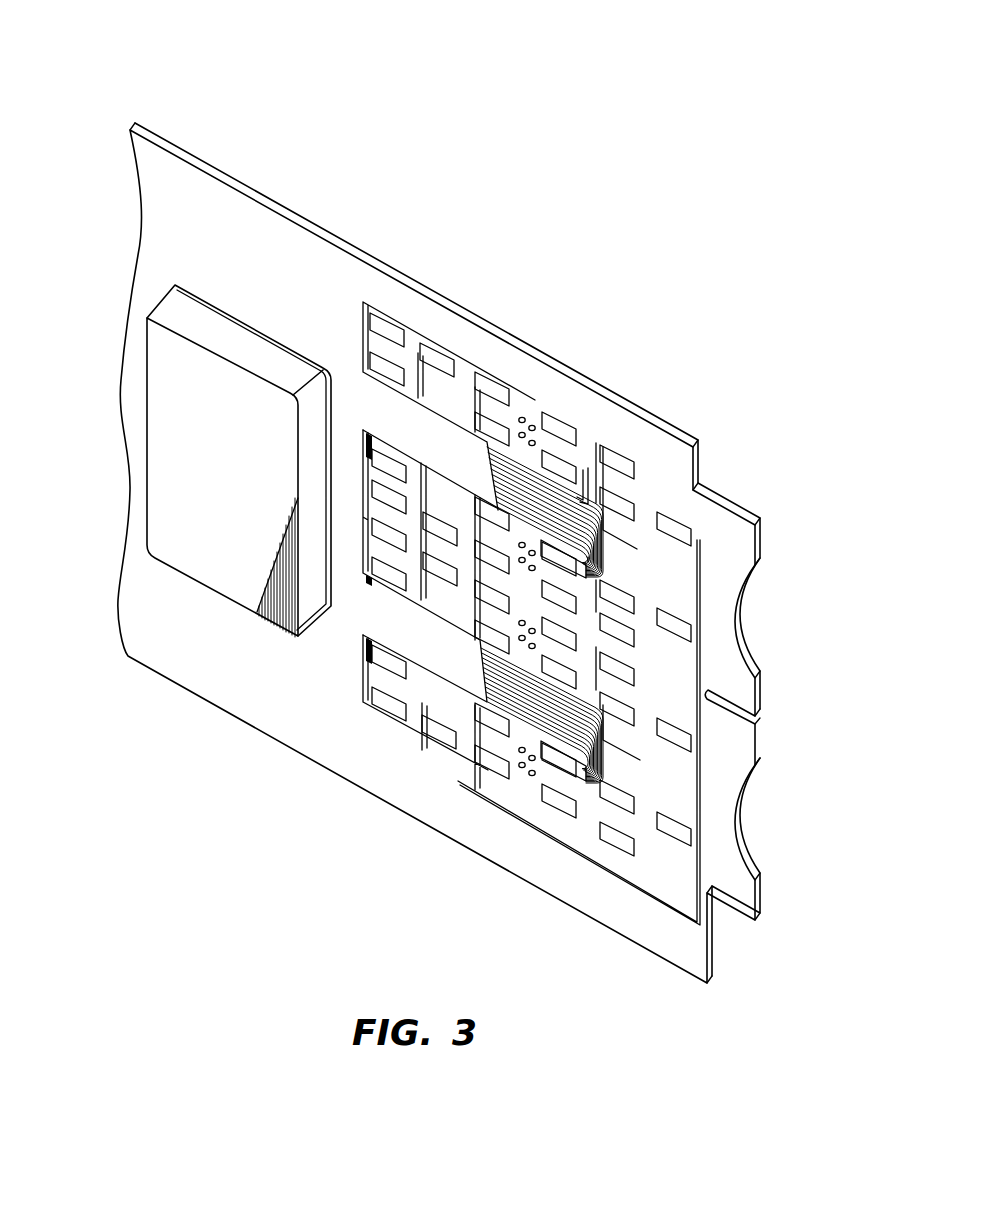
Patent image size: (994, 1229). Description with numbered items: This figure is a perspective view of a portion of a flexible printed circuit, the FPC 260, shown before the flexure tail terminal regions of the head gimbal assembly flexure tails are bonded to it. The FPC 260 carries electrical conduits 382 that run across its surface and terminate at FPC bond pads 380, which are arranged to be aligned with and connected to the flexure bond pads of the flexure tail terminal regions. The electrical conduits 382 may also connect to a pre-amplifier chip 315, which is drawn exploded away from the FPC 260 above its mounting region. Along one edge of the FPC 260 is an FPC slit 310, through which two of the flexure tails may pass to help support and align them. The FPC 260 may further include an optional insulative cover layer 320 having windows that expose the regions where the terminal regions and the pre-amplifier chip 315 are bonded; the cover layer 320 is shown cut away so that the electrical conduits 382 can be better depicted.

The flexible printed circuit 260 is at (438, 118).
The FPC slit 310 is at (760, 719).
The pre-amplifier chip 315 is at (182, 440).
The insulative cover layer 320 is at (220, 682).
The FPC bond pads 380 is at (432, 355).
The electrical conduits 382 is at (510, 450).